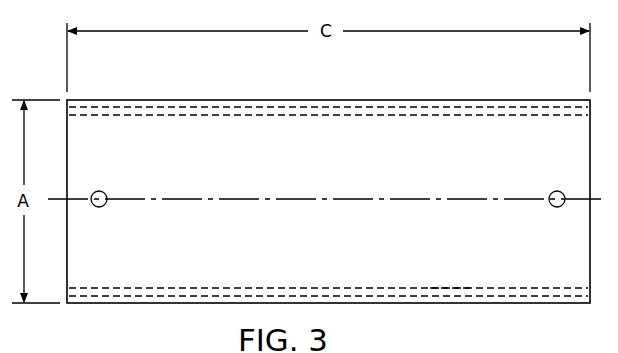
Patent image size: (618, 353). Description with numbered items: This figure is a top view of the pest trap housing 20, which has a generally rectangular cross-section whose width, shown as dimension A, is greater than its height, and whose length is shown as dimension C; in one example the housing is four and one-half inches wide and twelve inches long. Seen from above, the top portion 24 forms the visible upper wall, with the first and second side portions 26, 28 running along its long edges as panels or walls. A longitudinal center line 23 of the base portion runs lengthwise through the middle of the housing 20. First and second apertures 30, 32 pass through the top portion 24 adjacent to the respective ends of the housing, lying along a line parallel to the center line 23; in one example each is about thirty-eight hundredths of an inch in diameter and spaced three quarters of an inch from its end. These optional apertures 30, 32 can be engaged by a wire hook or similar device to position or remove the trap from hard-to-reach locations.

The housing 20 is at (407, 88).
The longitudinal center line 23 is at (372, 195).
The top portion 24 is at (443, 277).
The first side portion 26 is at (180, 305).
The second side portion 28 is at (188, 98).
The first aperture 30 is at (103, 193).
The second aperture 32 is at (557, 207).